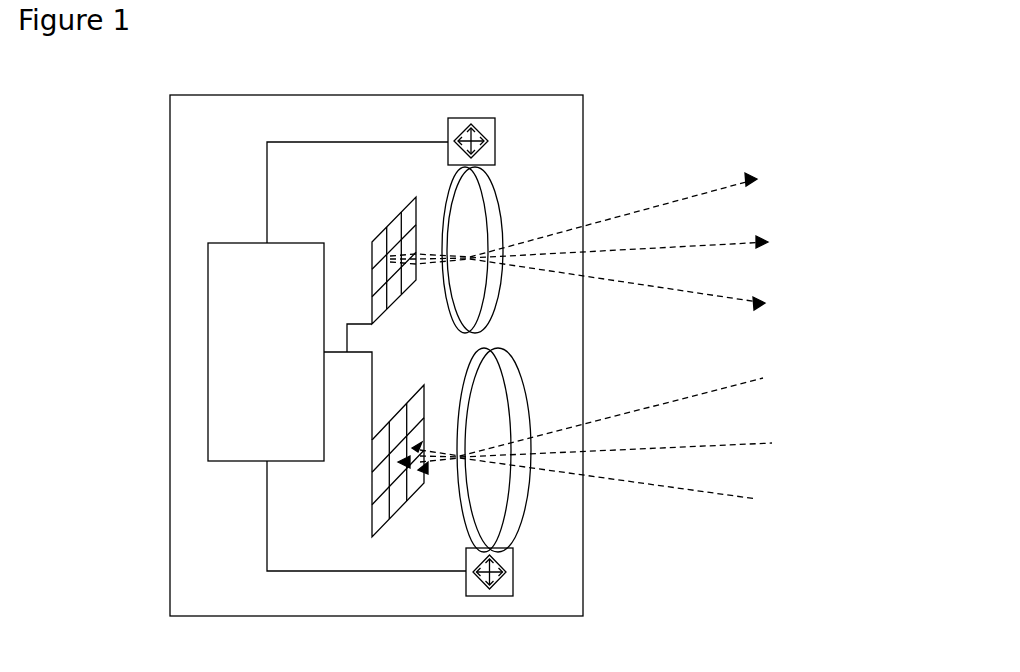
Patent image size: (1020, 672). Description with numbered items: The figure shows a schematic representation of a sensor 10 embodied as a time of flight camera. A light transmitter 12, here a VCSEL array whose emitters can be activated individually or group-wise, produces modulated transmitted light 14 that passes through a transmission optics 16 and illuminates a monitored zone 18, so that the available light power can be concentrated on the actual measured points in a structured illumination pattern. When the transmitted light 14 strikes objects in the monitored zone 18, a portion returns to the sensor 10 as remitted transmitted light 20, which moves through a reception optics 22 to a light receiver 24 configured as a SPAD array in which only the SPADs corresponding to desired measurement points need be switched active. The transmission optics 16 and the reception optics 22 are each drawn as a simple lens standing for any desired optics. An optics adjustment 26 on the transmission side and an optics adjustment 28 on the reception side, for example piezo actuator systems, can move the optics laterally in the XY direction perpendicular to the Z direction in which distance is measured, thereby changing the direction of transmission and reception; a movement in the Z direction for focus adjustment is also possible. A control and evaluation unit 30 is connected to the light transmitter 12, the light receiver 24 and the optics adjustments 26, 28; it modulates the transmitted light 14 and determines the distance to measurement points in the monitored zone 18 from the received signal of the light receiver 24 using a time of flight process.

The sensor 10 is at (264, 95).
The light transmitter 12 is at (400, 240).
The transmitted light 14 is at (718, 242).
The transmission optics 16 is at (493, 201).
The monitored zone 18 is at (903, 140).
The remitted transmitted light 20 is at (702, 447).
The reception optics 22 is at (493, 497).
The light receiver 24 is at (378, 492).
The optics adjustment 26 is at (452, 122).
The optics adjustment 28 is at (468, 588).
The control and evaluation unit 30 is at (243, 338).